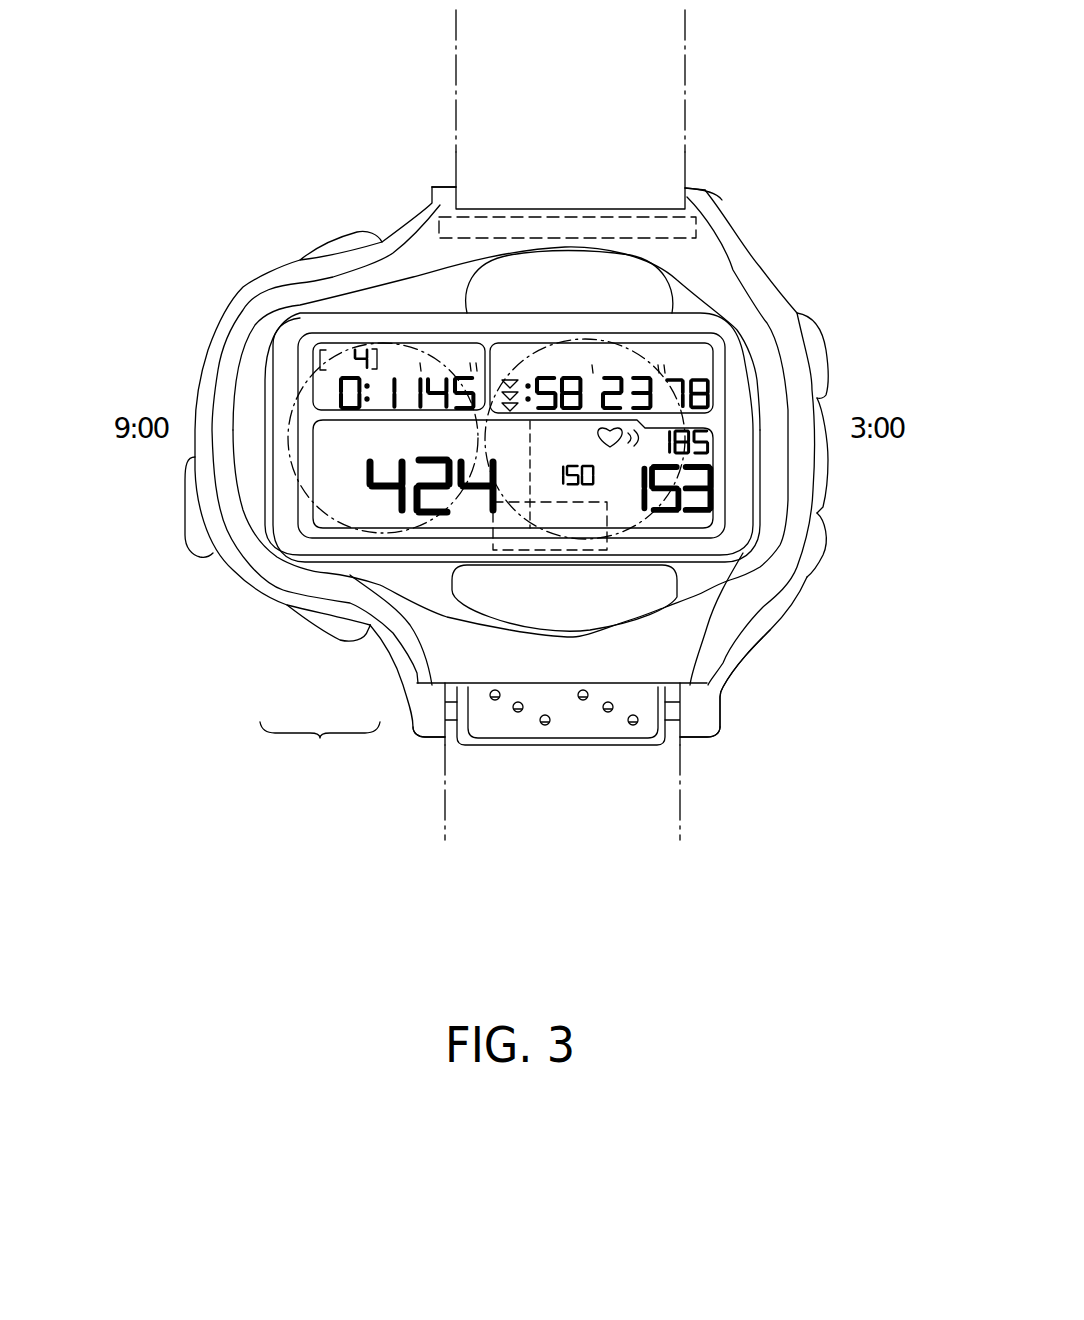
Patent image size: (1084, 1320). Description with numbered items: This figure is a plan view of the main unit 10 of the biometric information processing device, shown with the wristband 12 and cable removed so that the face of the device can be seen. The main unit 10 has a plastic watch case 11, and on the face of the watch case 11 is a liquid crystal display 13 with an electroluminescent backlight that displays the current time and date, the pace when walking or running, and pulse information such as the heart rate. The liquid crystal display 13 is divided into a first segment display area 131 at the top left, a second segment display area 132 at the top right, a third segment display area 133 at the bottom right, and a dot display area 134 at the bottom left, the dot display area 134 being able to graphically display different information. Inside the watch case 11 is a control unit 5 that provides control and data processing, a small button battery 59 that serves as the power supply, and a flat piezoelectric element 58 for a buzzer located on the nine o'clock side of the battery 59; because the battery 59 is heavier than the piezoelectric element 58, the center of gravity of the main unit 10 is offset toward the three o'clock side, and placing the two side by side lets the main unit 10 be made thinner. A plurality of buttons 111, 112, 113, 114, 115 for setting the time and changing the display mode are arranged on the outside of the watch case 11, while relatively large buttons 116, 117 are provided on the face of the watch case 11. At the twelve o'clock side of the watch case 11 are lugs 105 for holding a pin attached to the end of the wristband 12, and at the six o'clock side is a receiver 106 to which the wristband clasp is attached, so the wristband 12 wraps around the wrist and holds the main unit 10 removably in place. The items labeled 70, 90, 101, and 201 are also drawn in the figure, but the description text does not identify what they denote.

The control unit 5 is at (730, 560).
The main unit 10 is at (822, 290).
The watch case 11 is at (767, 267).
The wristband 12 is at (527, 812).
The liquid crystal display 13 is at (643, 600).
The piezoelectric element 58 is at (297, 390).
The button battery 59 is at (483, 510).
The sensor/terminal plate 70 is at (647, 740).
The antenna 90 is at (553, 550).
The operation button group 101 is at (320, 748).
The lugs 105 is at (705, 166).
The receiver 106 is at (697, 755).
The button 111 is at (822, 337).
The button 112 is at (813, 552).
The button 113 is at (354, 233).
The button 114 is at (190, 548).
The button 115 is at (317, 620).
The large button 116 is at (712, 713).
The large button 117 is at (667, 287).
The first segment display area 131 is at (334, 352).
The second segment display area 132 is at (707, 367).
The third segment display area 133 is at (707, 517).
The dot display area 134 is at (430, 530).
The internal sensor module 201 is at (695, 225).